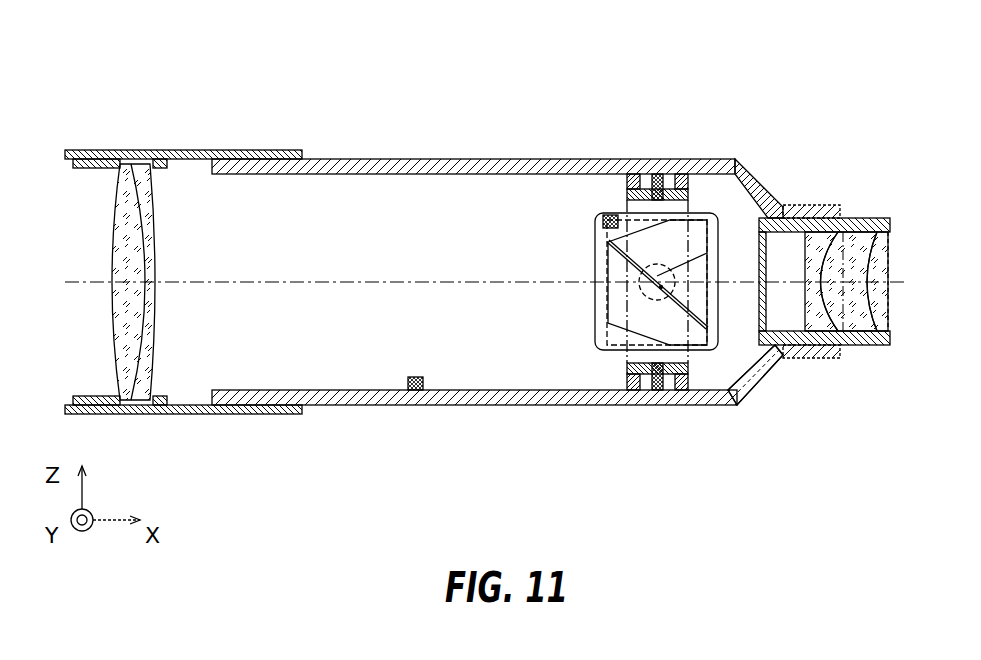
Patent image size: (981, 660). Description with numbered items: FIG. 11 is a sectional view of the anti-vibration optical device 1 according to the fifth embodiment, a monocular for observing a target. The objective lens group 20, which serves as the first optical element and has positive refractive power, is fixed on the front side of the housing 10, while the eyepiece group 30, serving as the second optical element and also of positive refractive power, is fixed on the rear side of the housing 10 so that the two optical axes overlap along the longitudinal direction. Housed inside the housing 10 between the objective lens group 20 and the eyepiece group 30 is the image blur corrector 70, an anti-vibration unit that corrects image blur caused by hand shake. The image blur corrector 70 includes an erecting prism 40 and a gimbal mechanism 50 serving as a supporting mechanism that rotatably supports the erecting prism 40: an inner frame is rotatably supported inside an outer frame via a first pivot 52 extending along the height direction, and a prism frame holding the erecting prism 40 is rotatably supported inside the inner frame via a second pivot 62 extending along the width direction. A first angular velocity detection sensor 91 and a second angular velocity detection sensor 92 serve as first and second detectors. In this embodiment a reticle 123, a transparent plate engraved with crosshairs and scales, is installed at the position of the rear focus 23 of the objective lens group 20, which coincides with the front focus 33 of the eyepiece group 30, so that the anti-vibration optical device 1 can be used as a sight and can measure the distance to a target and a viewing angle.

The anti-vibration optical device 1 is at (849, 106).
The housing 10 is at (400, 158).
The objective lens group 20 is at (113, 216).
The eyepiece group 30 is at (888, 266).
The erecting prism 40 is at (711, 257).
The gimbal mechanism 50 is at (700, 202).
The first pivot 52 is at (656, 175).
The second pivot 62 is at (661, 287).
The image blur corrector 70 is at (690, 151).
The first angular velocity detection sensor 91 is at (408, 384).
The second angular velocity detection sensor 92 is at (603, 215).
The reticle 123 is at (767, 263).
The rear focus 23 is at (774, 394).
The front focus 33 is at (758, 358).